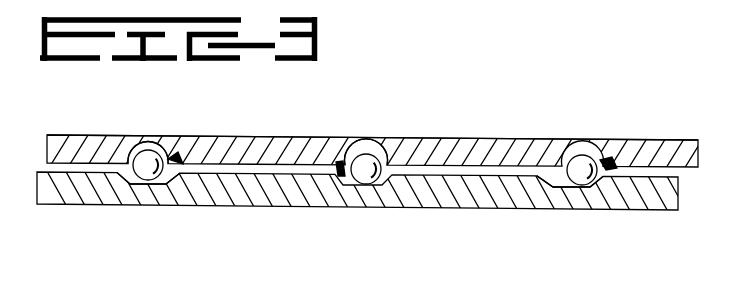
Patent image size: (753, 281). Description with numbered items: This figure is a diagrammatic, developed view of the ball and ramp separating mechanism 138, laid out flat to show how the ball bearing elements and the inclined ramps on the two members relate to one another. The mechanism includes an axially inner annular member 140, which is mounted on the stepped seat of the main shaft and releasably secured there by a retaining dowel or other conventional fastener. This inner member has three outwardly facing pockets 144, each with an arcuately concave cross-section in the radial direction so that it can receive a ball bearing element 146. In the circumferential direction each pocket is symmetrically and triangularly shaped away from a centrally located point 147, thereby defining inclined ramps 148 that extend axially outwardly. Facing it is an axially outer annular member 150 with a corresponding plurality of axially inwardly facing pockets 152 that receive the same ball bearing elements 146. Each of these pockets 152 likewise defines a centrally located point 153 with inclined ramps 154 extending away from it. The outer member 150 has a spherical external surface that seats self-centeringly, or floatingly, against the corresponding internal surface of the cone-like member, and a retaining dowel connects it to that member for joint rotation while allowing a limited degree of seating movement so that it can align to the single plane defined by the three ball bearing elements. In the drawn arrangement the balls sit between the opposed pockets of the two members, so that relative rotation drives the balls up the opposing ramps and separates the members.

The ball and ramp separating mechanism 138 is at (516, 140).
The axially inner annular member 140 is at (90, 140).
The outwardly facing pocket 144 is at (184, 172).
The ball bearing element 146 is at (360, 162).
The centrally located point 147 is at (397, 162).
The inclined ramp 148 is at (620, 167).
The axially outer annular member 150 is at (238, 197).
The axially inwardly facing pocket 152 is at (337, 170).
The centrally located point 153 is at (555, 181).
The inclined ramp 154 is at (130, 181).